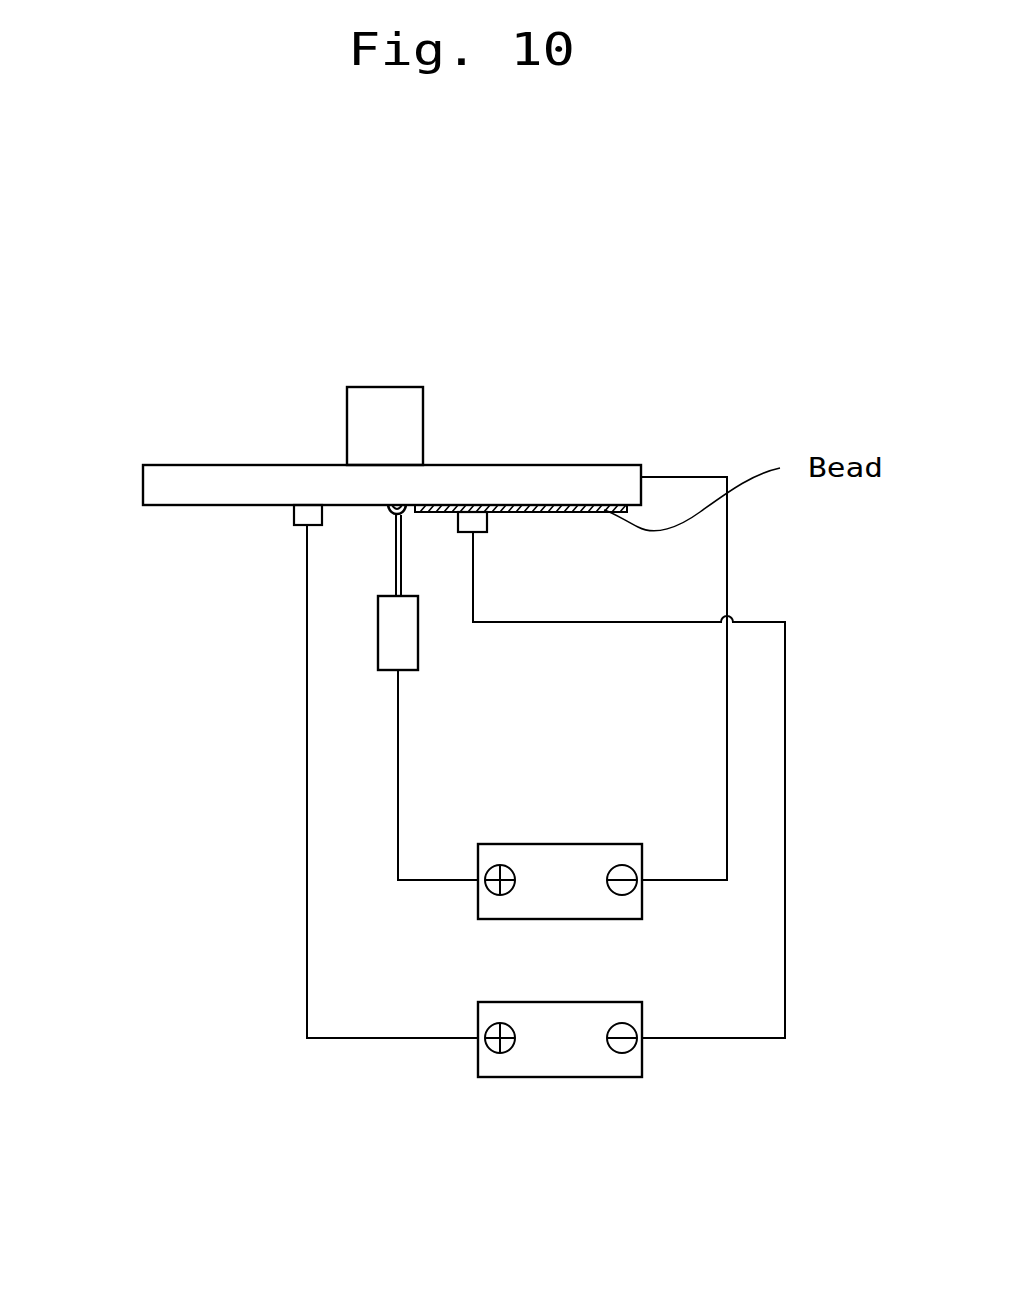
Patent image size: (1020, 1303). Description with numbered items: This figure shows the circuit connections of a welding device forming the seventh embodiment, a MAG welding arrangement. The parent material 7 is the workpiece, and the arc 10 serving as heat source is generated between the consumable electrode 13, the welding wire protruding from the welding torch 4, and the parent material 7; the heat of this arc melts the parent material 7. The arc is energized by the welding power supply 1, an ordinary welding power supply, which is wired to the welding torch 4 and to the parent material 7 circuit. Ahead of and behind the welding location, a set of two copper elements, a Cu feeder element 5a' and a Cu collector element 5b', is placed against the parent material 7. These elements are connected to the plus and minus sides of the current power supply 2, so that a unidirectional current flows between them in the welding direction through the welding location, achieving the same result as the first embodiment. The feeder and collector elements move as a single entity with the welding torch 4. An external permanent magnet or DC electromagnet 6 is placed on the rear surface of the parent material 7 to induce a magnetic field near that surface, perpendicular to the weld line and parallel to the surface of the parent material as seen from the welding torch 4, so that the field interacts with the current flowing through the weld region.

The welding power supply 1 is at (527, 852).
The current power supply 2 is at (537, 1068).
The welding torch 4 is at (418, 648).
The Cu feeder element 5a' is at (269, 551).
The Cu collector element 5b' is at (515, 466).
The external permanent magnet or DC electromagnet 6 is at (394, 410).
The parent material 7 is at (150, 482).
The arc (heat source) 10 is at (399, 505).
The consumable electrode 13 is at (403, 565).